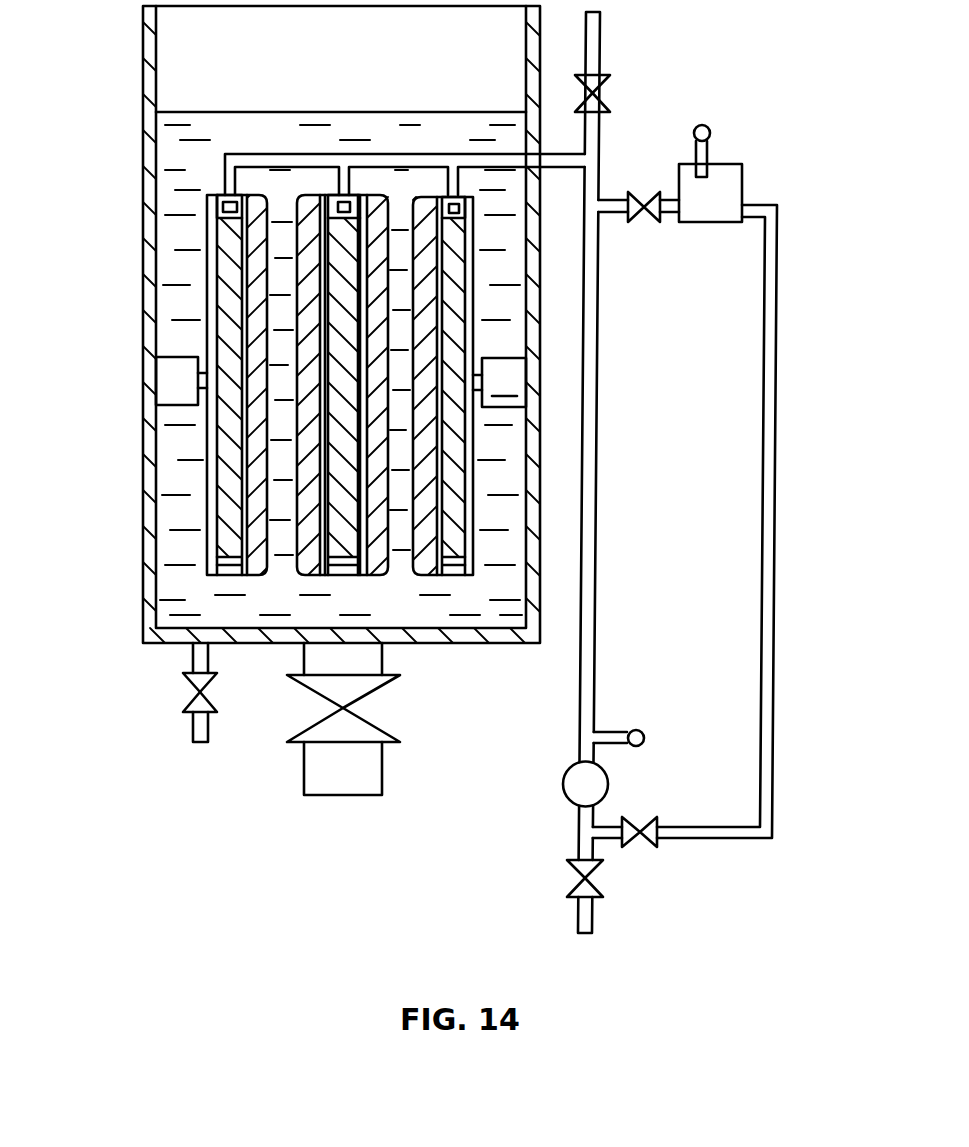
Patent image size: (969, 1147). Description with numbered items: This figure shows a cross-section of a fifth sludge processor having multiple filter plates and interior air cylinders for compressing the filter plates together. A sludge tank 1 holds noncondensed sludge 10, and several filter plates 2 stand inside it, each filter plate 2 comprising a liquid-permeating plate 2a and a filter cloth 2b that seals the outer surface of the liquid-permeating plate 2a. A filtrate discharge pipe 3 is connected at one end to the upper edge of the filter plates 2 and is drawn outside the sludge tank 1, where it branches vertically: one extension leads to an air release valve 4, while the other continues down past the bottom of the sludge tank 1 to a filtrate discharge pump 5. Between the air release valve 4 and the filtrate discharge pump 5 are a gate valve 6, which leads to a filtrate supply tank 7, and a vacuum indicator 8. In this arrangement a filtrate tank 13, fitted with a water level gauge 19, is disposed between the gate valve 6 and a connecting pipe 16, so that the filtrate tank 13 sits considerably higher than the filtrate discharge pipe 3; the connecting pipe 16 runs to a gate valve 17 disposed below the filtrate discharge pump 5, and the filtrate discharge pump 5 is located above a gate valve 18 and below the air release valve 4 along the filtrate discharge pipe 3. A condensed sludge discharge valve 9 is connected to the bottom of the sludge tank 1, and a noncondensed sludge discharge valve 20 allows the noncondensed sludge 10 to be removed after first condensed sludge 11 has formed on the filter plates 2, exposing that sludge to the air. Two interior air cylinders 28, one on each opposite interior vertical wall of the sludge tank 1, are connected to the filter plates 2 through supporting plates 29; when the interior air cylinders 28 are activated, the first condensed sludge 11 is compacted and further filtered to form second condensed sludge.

The sludge tank 1 is at (138, 567).
The filter plate 2 is at (277, 450).
The liquid-permeating plate 2a is at (220, 321).
The filter cloth 2b is at (220, 291).
The filtrate discharge pipe 3 is at (596, 535).
The air release valve 4 is at (610, 100).
The filtrate discharge pump 5 is at (562, 783).
The gate valve 6 is at (638, 215).
The filtrate supply tank 7 is at (737, 505).
The vacuum indicator 8 is at (647, 733).
The condensed sludge discharge valve 9 is at (373, 725).
The noncondensed sludge 10 is at (168, 125).
The first condensed sludge 11 is at (253, 233).
The filtrate tank 13 is at (743, 180).
The connecting pipe 16 is at (775, 267).
The gate valve 17 is at (630, 840).
The gate valve 18 is at (582, 885).
The water level gauge 19 is at (712, 132).
The noncondensed sludge discharge valve 20 is at (197, 698).
The interior air cylinder 28 is at (162, 382).
The supporting plate 29 is at (210, 463).